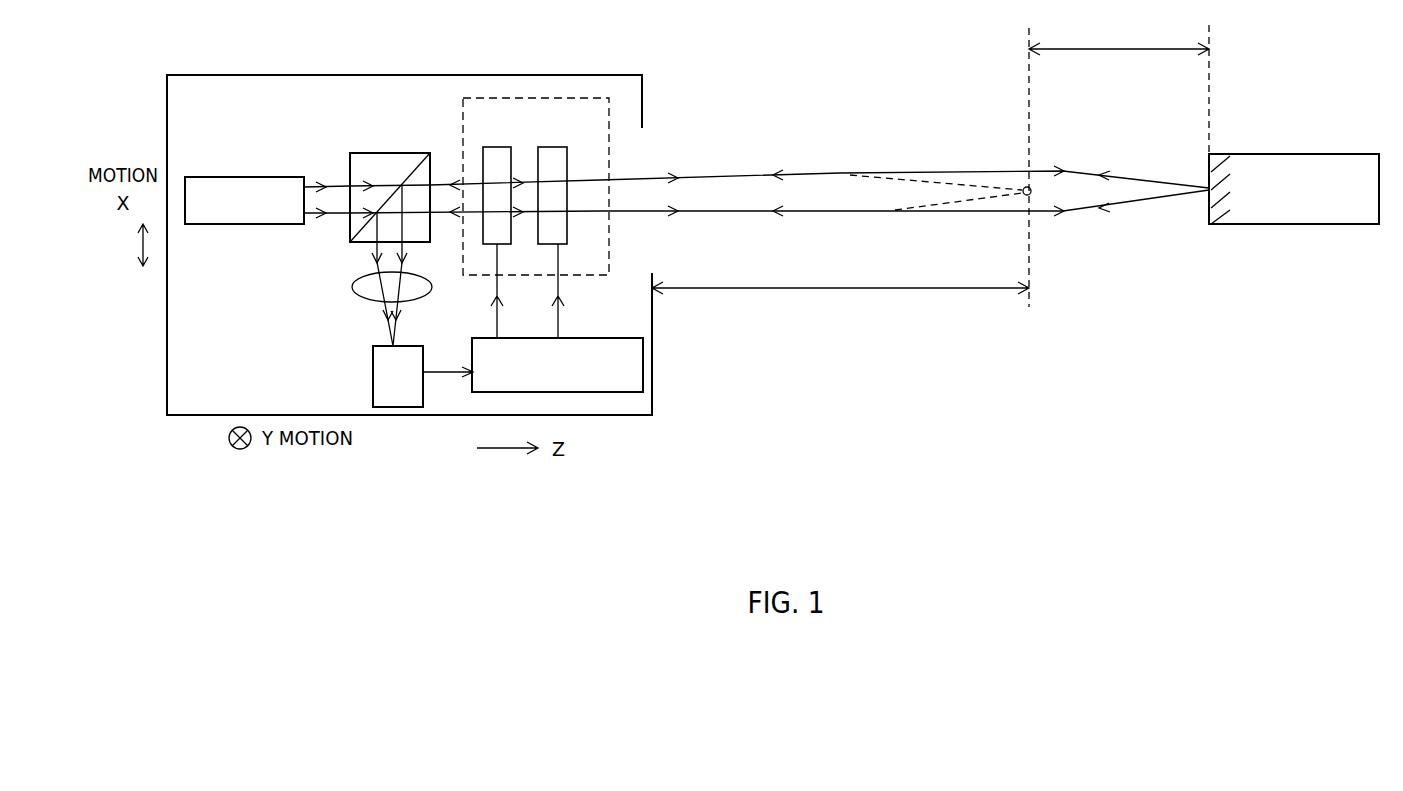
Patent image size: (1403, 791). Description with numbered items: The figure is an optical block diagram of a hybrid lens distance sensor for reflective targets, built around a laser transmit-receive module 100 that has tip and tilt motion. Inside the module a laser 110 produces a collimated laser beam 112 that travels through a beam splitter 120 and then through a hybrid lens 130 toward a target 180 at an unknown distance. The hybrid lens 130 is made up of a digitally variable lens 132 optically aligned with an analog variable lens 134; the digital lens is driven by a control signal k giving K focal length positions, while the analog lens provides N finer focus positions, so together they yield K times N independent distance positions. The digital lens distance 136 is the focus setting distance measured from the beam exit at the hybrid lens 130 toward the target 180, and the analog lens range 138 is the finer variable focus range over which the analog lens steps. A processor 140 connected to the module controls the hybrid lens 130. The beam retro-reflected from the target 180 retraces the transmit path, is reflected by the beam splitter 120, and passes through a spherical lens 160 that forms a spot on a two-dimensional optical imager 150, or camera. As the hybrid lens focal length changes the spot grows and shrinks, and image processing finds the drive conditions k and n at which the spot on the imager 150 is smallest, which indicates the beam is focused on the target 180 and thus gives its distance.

The laser transmit-receive module 100 is at (188, 352).
The laser 110 is at (222, 176).
The laser beam 112 is at (320, 185).
The beam splitter 120 is at (393, 162).
The hybrid lens 130 is at (533, 110).
The digitally variable lens 132 is at (484, 158).
The analog variable lens 134 is at (556, 157).
The digital lens distance 136 is at (737, 287).
The analog lens range 138 is at (1092, 47).
The processor 140 is at (473, 338).
The two-dimensional optical imager 150 is at (373, 355).
The spherical lens 160 is at (357, 284).
The target 180 is at (1296, 154).